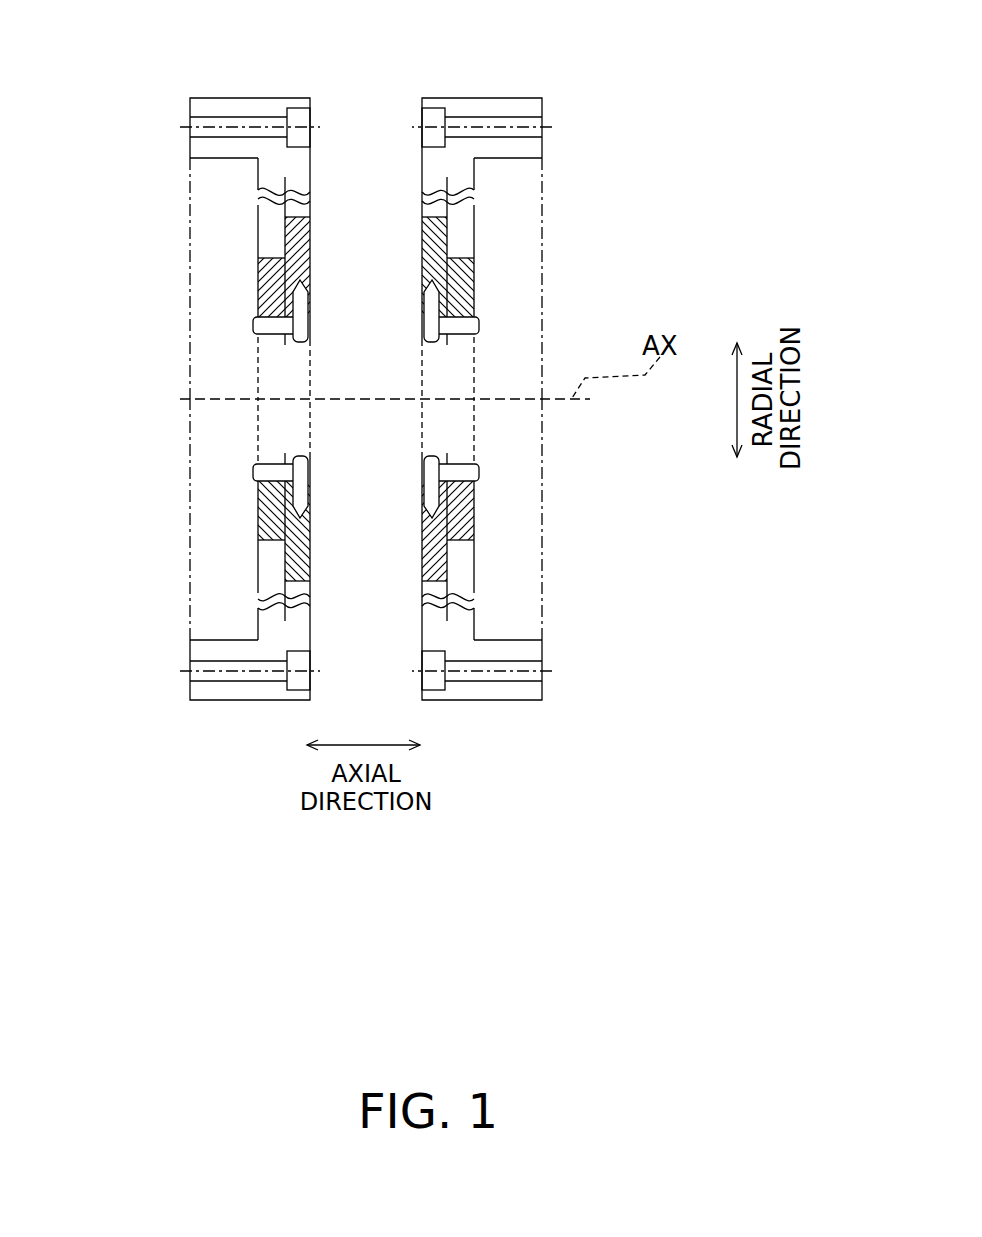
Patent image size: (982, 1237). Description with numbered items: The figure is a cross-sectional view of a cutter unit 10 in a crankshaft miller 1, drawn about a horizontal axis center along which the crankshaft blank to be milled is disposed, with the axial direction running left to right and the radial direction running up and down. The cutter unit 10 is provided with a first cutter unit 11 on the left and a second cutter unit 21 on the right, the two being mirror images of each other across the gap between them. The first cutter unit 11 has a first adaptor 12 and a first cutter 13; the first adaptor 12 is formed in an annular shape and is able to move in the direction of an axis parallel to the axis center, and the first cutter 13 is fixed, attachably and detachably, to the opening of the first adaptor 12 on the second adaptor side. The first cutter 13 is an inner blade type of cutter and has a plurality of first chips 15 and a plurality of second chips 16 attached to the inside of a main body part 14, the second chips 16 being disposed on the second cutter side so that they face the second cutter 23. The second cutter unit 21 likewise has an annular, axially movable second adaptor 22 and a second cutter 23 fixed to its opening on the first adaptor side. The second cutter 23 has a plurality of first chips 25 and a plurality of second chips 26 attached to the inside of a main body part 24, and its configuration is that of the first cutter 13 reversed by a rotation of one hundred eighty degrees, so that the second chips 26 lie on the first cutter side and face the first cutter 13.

The crankshaft miller 1 is at (783, 43).
The cutter unit 10 is at (427, 354).
The first cutter unit 11 is at (258, 87).
The first adaptor 12 is at (188, 107).
The first cutter 13 is at (248, 272).
The main body part 14 is at (310, 253).
The first chips 15 is at (253, 325).
The second chips 16 is at (300, 342).
The second cutter unit 21 is at (485, 87).
The second adaptor 22 is at (544, 107).
The second cutter 23 is at (484, 272).
The main body part 24 is at (423, 252).
The first chips 25 is at (478, 327).
The second chips 26 is at (432, 342).